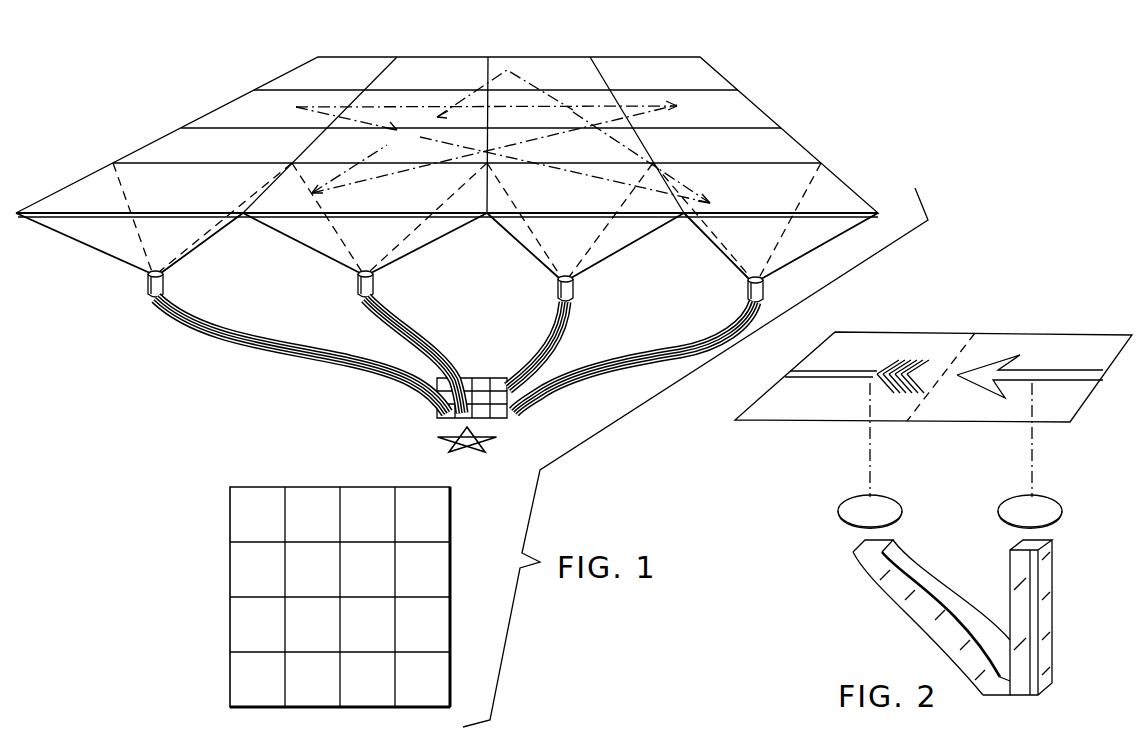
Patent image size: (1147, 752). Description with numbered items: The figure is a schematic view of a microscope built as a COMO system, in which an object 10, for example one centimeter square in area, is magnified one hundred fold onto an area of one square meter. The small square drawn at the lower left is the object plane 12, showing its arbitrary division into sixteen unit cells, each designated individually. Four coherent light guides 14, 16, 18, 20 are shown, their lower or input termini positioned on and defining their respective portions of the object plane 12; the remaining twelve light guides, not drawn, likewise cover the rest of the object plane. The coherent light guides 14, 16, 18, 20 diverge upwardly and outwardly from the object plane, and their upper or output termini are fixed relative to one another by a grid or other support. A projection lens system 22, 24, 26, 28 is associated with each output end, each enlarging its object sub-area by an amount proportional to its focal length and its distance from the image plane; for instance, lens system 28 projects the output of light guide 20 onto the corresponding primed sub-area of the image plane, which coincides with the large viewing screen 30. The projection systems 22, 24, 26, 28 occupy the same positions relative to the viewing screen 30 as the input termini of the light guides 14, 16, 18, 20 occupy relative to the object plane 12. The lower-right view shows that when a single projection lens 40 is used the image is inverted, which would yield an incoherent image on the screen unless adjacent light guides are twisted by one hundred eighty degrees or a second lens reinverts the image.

In FIG. 1, the object 10 is at (436, 438).
In FIG. 1, the object plane 12 is at (333, 524).
In FIG. 1, the coherent light guide 14 is at (301, 355).
In FIG. 1, the coherent light guide 16 is at (414, 355).
In FIG. 1, the coherent light guide 18 is at (554, 345).
In FIG. 1, the coherent light guide 20 is at (634, 357).
In FIG. 1, the projection lens system 22 is at (154, 230).
In FIG. 1, the projection lens system 24 is at (365, 230).
In FIG. 1, the projection lens system 26 is at (585, 232).
In FIG. 1, the projection lens system 28 is at (765, 232).
In FIG. 1, the viewing screen 30 is at (447, 137).
In FIG. 2, the projection lens 40 is at (971, 504).